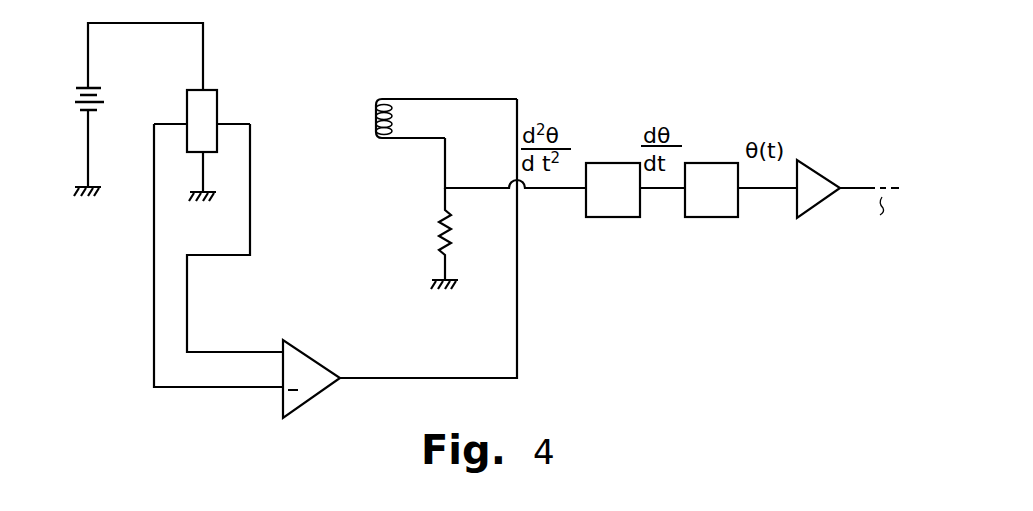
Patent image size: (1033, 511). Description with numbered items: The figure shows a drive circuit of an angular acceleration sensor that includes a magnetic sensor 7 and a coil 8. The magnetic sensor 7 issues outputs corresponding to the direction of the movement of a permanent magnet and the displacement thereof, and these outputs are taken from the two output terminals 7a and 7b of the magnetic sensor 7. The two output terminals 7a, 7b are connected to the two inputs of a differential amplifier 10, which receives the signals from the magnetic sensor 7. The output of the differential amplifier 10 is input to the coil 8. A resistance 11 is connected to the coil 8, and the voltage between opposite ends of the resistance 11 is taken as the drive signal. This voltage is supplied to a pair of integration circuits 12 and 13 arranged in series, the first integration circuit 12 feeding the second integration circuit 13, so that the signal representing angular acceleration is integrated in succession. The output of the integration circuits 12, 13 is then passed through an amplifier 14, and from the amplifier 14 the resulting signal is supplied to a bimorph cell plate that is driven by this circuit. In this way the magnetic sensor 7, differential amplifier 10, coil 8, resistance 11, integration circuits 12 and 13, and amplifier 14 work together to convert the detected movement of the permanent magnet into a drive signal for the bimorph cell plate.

The magnetic sensor 7 is at (208, 110).
The output terminal 7a is at (168, 122).
The output terminal 7b is at (240, 123).
The coil 8 is at (378, 98).
The differential amplifier 10 is at (317, 383).
The resistance 11 is at (435, 225).
The integration circuit 12 is at (611, 210).
The integration circuit 13 is at (705, 210).
The amplifier 14 is at (808, 202).